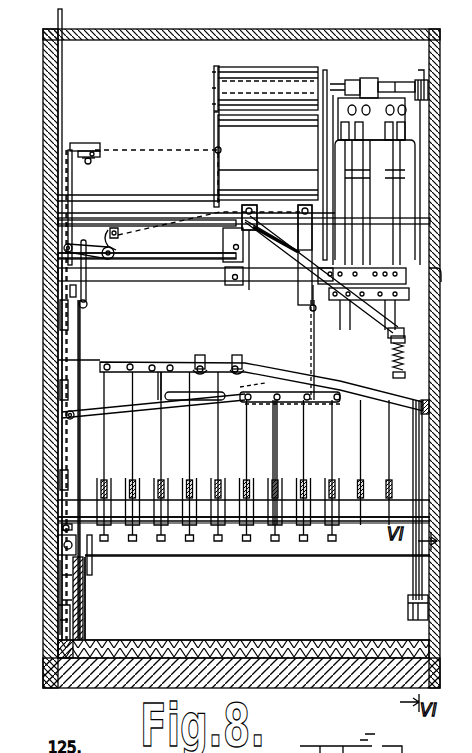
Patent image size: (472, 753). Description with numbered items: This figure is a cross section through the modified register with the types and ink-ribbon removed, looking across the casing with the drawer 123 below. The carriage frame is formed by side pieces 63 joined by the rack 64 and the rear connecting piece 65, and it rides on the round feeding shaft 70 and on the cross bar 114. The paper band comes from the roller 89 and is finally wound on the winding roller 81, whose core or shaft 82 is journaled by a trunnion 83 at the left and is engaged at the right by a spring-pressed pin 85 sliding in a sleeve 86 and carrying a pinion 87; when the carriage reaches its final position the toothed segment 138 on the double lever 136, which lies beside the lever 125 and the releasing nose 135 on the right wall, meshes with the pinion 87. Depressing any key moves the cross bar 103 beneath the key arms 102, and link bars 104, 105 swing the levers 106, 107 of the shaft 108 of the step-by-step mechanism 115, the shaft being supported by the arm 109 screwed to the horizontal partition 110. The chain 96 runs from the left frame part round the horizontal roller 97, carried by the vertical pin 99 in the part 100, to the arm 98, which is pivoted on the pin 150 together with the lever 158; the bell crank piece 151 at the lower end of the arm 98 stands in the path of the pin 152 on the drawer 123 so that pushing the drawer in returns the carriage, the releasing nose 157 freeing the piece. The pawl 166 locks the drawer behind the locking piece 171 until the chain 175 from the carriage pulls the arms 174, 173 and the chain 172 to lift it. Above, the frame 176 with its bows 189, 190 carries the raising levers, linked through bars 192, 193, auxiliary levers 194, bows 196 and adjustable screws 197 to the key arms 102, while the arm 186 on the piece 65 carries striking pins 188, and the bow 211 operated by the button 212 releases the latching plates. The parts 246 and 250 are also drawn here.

The lever 158 is at (62, 64).
The part 100 is at (80, 143).
The horizontal roller 97 is at (96, 150).
The vertical pin 99 is at (92, 162).
The arm 98 is at (74, 181).
The chain 96 is at (157, 148).
The chain 175 is at (163, 228).
The feeding shaft 70 is at (133, 198).
The cross bar 114 is at (100, 224).
The arm of bell crank lever 173 is at (90, 256).
The arm of bell crank lever 174 is at (113, 244).
The horizontal partition 110 is at (170, 255).
The step-by-step mechanism 115 is at (223, 250).
The shaft 108 is at (163, 283).
The lever 106 is at (76, 292).
The pin 150 is at (87, 308).
The chain 172 is at (70, 343).
The link bar 104 is at (82, 352).
The bar 193 is at (150, 395).
The bow 189 is at (198, 356).
The bow 190 is at (237, 356).
The frame 176 is at (370, 397).
The bar 192 is at (188, 436).
The key arm 102 is at (105, 478).
The auxiliary lever 194 is at (276, 420).
The lever 125 is at (415, 447).
The double lever 136 is at (419, 462).
The cross bar 103 is at (350, 515).
The bow 196 is at (258, 545).
The adjustable screw 197 is at (222, 544).
The pawl 166 is at (78, 547).
The nut 246 is at (78, 540).
The post 250 is at (95, 578).
The locking piece 171 is at (84, 590).
The bell crank piece 151 is at (86, 612).
The releasing nose 157 is at (95, 628).
The pin 152 is at (60, 626).
The drawer 123 is at (257, 587).
The releasing nose 135 is at (408, 606).
The winding roller 81 is at (276, 72).
The core or shaft 82 is at (290, 80).
The trunnion 83 is at (216, 84).
The side piece 63 is at (225, 96).
The roller 89 is at (282, 150).
The rear connecting piece 65 is at (276, 213).
The rack 64 is at (268, 210).
The pin 85 is at (338, 86).
The toothed segment 138 is at (372, 86).
The sleeve 86 is at (383, 78).
The pinion 87 is at (420, 80).
The arm 109 is at (306, 272).
The lever 107 is at (308, 308).
The link bar 105 is at (311, 340).
The bow 211 is at (349, 302).
The arm 186 is at (380, 330).
The striking pin 188 is at (392, 370).
The button 212 is at (438, 280).